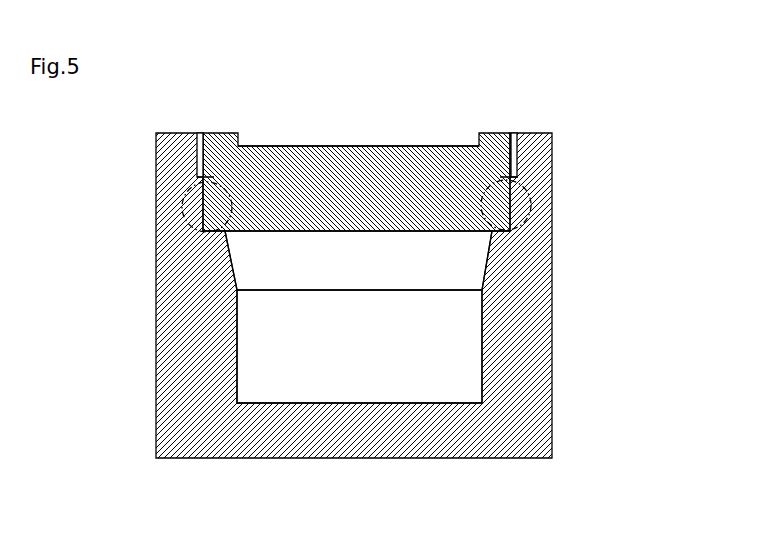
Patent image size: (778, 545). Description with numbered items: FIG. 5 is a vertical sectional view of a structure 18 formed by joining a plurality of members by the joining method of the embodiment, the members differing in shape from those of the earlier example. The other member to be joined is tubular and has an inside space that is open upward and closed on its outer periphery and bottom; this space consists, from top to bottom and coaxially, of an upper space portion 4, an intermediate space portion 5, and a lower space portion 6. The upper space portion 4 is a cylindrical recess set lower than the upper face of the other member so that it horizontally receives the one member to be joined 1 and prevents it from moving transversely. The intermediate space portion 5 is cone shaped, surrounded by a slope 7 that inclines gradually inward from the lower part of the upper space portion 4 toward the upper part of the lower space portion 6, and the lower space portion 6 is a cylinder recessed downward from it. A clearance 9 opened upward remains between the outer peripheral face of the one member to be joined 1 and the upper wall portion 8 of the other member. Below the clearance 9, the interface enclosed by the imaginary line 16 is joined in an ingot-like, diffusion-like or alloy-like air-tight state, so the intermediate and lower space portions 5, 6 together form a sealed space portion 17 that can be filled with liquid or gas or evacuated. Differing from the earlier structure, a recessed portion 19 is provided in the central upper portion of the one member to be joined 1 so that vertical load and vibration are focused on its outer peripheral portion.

The one member to be joined 1 is at (497, 126).
The upper space portion 4 is at (522, 171).
The intermediate space portion 5 is at (467, 277).
The lower space portion 6 is at (467, 350).
The slope 7 is at (535, 126).
The upper wall portion 8 is at (553, 157).
The clearance 9 is at (200, 132).
The imaginary line 16 is at (157, 217).
The sealed space portion 17 is at (613, 338).
The structure 18 is at (570, 62).
The recess 19 is at (305, 145).